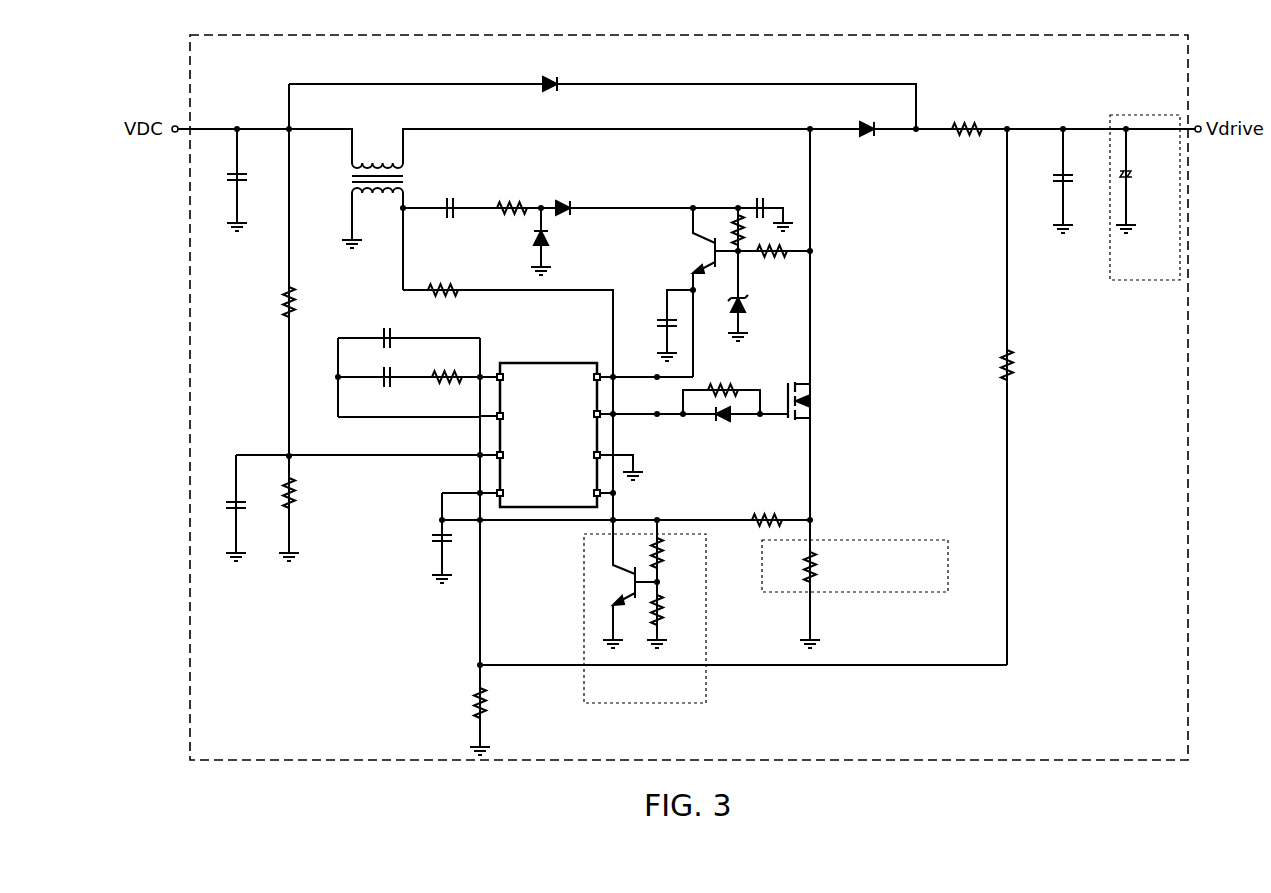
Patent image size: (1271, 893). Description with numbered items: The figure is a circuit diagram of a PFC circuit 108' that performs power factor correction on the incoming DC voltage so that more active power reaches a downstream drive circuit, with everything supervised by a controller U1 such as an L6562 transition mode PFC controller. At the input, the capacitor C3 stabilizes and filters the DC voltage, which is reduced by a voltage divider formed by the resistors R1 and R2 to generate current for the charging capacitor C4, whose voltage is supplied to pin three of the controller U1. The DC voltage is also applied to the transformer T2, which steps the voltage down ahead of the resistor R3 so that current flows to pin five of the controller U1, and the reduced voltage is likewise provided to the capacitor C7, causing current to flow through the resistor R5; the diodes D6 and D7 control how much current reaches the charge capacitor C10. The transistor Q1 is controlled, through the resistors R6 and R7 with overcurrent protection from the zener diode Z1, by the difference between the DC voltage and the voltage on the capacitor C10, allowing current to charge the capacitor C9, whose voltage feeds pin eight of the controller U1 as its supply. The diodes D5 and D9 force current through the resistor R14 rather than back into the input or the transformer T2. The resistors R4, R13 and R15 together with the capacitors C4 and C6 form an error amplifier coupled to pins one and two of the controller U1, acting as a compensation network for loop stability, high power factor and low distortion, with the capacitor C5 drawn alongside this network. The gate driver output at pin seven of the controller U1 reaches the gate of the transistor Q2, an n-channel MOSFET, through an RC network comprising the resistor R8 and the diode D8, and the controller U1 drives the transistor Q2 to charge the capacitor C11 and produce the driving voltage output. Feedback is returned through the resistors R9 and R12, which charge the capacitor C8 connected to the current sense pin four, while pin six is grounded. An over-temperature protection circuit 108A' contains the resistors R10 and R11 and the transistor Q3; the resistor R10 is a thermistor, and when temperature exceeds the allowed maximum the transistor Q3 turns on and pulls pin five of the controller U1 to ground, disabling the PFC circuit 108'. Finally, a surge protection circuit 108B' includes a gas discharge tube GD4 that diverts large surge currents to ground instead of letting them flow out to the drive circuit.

The PFC circuit 108' is at (689, 397).
The over-temperature protection circuit 108A' is at (645, 618).
The surge protection circuit 108B' is at (1145, 197).
The capacitor C3 is at (225, 180).
The charging capacitor C4 is at (222, 508).
The capacitor C5 is at (385, 329).
The capacitor C6 is at (382, 388).
The capacitor C7 is at (448, 199).
The capacitor C8 is at (442, 538).
The capacitor C9 is at (661, 325).
The charge capacitor C10 is at (765, 206).
The capacitor C11 is at (1044, 181).
The resistor R1 is at (279, 270).
The resistor R2 is at (280, 508).
The resistor R3 is at (508, 391).
The resistor R4 is at (447, 367).
The resistor R5 is at (512, 197).
The resistor R6 is at (725, 229).
The resistor R7 is at (774, 259).
The resistor R8 is at (721, 389).
The resistor R9 is at (767, 509).
The resistor R10 is at (673, 551).
The resistor R11 is at (671, 615).
The resistor R12 is at (855, 584).
The resistor R13 is at (462, 710).
The resistor R14 is at (965, 119).
The resistor R15 is at (988, 397).
The diode D5 is at (602, 93).
The diode D6 is at (528, 241).
The diode D7 is at (562, 198).
The diode D8 is at (721, 425).
The diode D9 is at (865, 119).
The zener diode Z1 is at (752, 296).
The transformer T2 is at (372, 212).
The controller U1 is at (561, 423).
The transistor Q1 is at (704, 292).
The transistor Q2 is at (813, 401).
The transistor Q3 is at (623, 584).
The gas discharge tube GD4 is at (1143, 181).